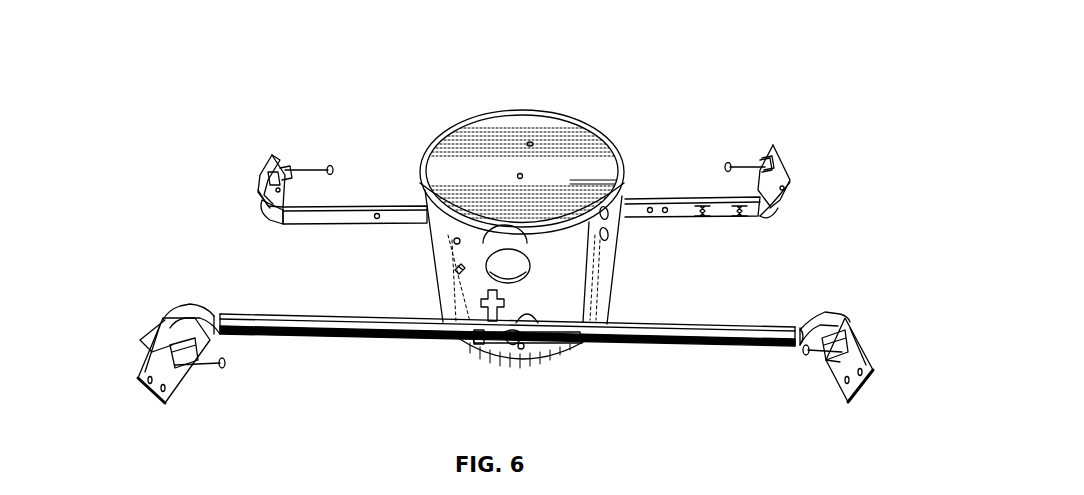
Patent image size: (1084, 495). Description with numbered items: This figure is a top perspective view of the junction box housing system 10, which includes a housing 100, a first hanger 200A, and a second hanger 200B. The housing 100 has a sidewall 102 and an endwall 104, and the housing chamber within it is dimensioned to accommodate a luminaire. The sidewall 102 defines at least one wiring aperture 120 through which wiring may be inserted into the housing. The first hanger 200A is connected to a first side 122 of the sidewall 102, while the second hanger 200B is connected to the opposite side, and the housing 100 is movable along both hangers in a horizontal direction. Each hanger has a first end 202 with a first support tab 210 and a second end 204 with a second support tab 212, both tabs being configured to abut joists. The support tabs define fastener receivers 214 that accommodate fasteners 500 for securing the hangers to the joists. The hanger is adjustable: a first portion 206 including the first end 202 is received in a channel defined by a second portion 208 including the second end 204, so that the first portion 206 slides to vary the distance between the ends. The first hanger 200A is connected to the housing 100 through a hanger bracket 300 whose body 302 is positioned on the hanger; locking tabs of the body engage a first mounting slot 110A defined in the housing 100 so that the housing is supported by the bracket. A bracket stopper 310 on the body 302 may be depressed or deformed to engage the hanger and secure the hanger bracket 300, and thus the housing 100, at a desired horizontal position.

The junction box housing system 10 is at (728, 56).
The housing 100 is at (539, 209).
The sidewall 102 is at (616, 268).
The endwall 104 is at (464, 133).
The first mounting slot 110A is at (560, 343).
The wiring aperture 120 is at (533, 262).
The first side 122 is at (518, 358).
The first hanger 200A is at (668, 346).
The second hanger 200B is at (779, 150).
The first end 202 is at (270, 157).
The second end 204 is at (785, 187).
The first portion 206 is at (263, 206).
The second portion 208 is at (770, 212).
The first support tab 210 is at (258, 172).
The second support tab 212 is at (782, 196).
The fastener receiver 214 is at (288, 166).
The hanger bracket 300 is at (530, 348).
The body 302 is at (510, 350).
The bracket stopper 310 is at (475, 350).
The fastener 500 is at (334, 171).